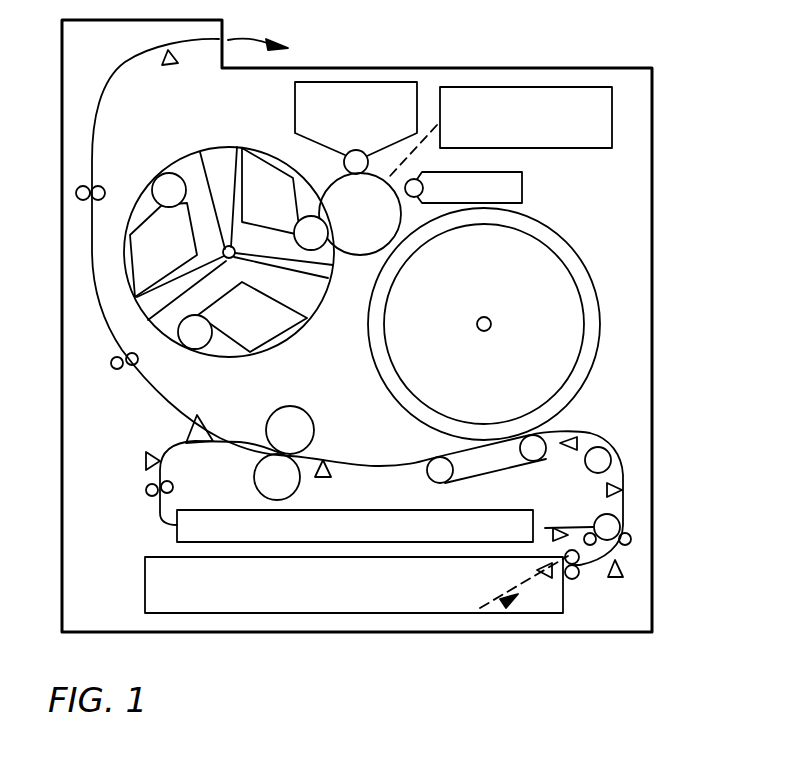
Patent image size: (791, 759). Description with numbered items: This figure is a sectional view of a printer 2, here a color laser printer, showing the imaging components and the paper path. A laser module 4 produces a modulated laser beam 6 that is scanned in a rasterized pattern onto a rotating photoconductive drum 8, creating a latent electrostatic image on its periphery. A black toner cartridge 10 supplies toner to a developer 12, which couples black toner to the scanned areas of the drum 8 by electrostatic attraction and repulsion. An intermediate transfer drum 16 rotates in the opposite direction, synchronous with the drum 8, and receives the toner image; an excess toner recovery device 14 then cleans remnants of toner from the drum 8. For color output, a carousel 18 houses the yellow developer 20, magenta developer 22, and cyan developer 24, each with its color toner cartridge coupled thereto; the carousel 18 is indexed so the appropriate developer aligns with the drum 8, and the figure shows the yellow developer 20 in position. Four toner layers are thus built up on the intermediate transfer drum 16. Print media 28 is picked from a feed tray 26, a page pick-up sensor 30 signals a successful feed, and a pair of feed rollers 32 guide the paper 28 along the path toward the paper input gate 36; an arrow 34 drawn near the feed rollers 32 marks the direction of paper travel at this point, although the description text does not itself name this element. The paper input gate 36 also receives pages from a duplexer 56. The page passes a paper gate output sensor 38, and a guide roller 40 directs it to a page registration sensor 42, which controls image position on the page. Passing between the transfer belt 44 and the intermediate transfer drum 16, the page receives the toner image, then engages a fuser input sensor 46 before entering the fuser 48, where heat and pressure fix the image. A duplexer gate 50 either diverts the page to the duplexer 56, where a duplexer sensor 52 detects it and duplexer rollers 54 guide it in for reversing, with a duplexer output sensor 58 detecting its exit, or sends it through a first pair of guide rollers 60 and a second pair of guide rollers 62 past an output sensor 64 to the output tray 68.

The printer 2 is at (653, 272).
The laser module 4 is at (528, 130).
The laser beam 6 is at (437, 125).
The photoconductive drum 8 is at (368, 225).
The black toner cartridge 10 is at (364, 82).
The developer 12 is at (364, 150).
The excess toner recovery device 14 is at (523, 186).
The intermediate transfer drum 16 is at (592, 278).
The carousel 18 is at (229, 228).
The yellow developer 20 is at (322, 244).
The magenta developer 22 is at (206, 343).
The cyan developer 24 is at (180, 201).
The feed tray 26 is at (145, 590).
The print media 28 is at (495, 598).
The page pick-up sensor 30 is at (537, 570).
The feed rollers 32 is at (572, 580).
The paper path direction 34 is at (626, 576).
The paper input gate 36 is at (626, 537).
The paper gate output sensor 38 is at (620, 483).
The guide roller 40 is at (607, 445).
The page registration sensor 42 is at (578, 440).
The transfer belt 44 is at (483, 474).
The fuser input sensor 46 is at (318, 478).
The fuser 48 is at (311, 419).
The duplexer gate 50 is at (188, 432).
The duplexer sensor 52 is at (146, 461).
The duplexer rollers 54 is at (151, 500).
The duplexer 56 is at (238, 510).
The duplexer output sensor 58 is at (553, 535).
The first pair of guide rollers 60 is at (118, 371).
The second pair of guide rollers 62 is at (80, 197).
The output sensor 64 is at (169, 66).
The output tray 68 is at (252, 40).